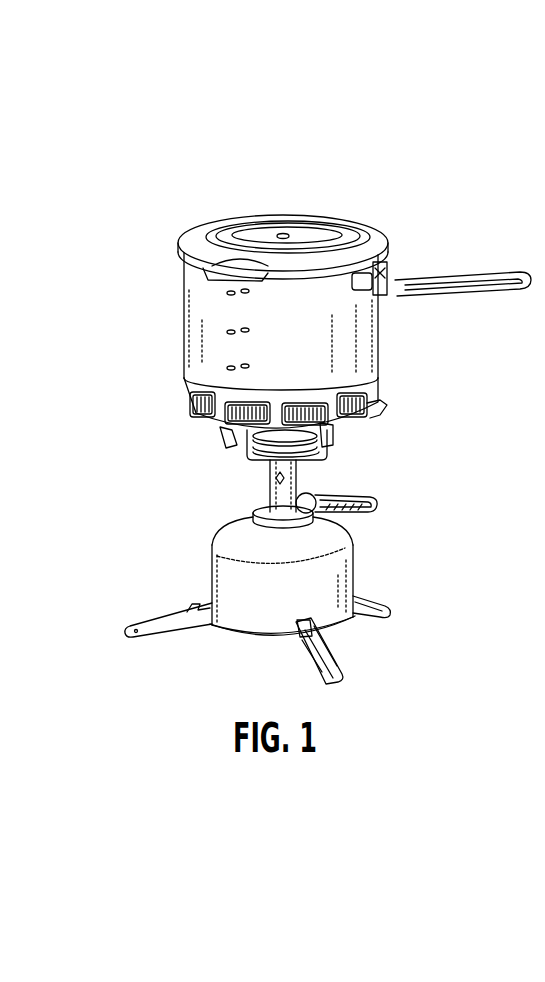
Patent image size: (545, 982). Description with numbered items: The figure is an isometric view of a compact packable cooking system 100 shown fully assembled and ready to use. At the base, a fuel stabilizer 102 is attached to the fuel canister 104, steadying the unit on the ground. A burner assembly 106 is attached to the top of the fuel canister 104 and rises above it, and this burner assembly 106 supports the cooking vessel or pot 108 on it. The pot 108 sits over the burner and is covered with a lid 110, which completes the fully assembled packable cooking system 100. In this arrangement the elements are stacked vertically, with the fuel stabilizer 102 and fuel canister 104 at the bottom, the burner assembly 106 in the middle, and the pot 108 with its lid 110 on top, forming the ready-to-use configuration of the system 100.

The packable cooking system 100 is at (160, 192).
The fuel stabilizer 102 is at (260, 649).
The fuel canister 104 is at (345, 578).
The burner assembly 106 is at (213, 478).
The pot 108 is at (360, 350).
The lid 110 is at (347, 230).